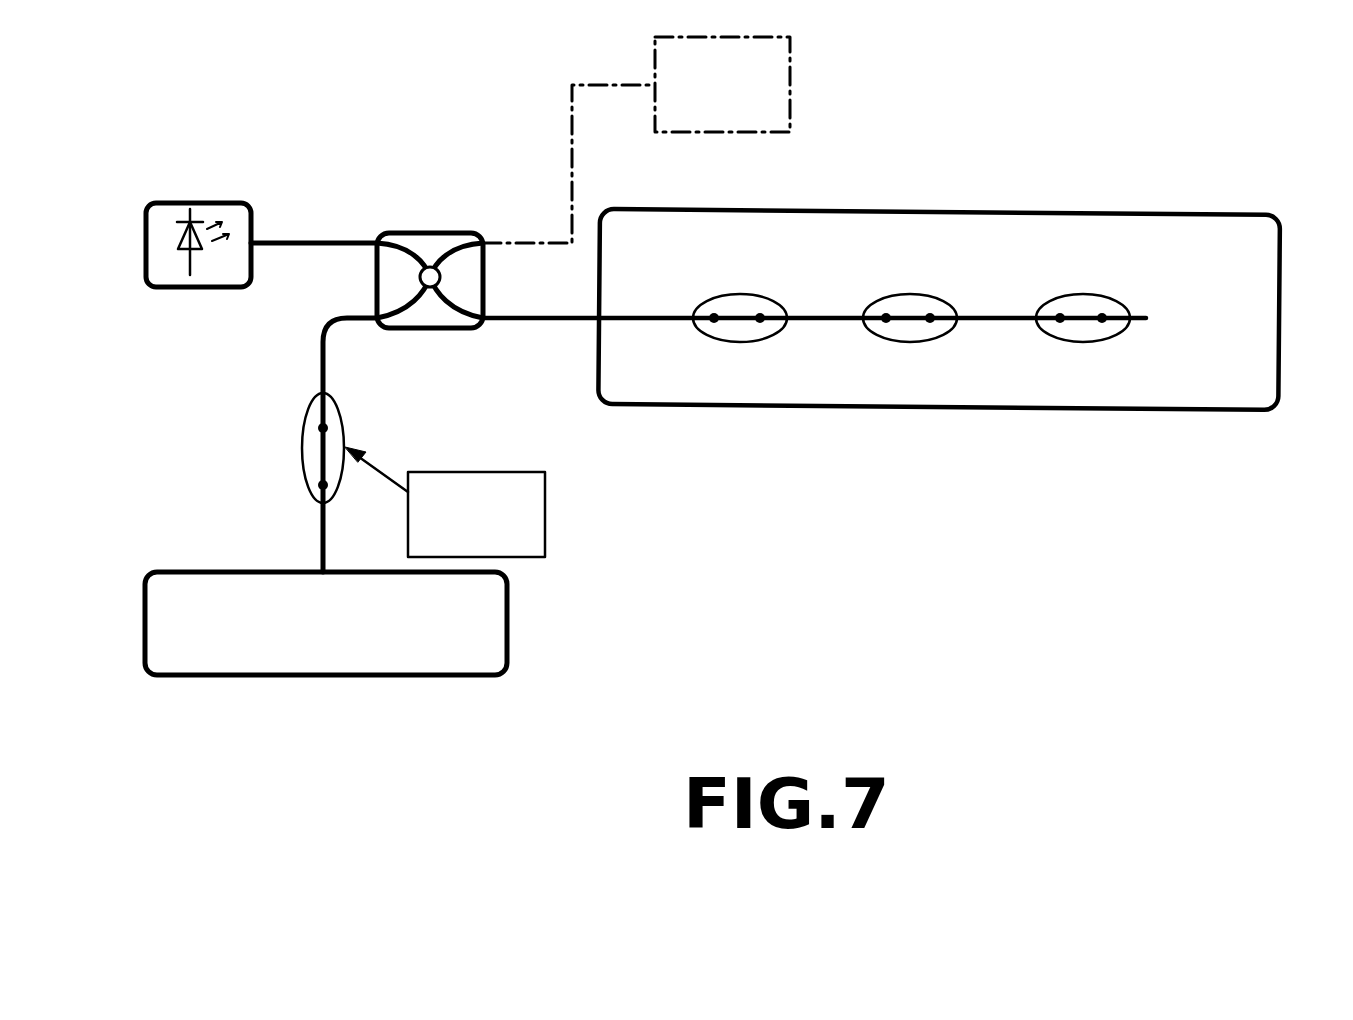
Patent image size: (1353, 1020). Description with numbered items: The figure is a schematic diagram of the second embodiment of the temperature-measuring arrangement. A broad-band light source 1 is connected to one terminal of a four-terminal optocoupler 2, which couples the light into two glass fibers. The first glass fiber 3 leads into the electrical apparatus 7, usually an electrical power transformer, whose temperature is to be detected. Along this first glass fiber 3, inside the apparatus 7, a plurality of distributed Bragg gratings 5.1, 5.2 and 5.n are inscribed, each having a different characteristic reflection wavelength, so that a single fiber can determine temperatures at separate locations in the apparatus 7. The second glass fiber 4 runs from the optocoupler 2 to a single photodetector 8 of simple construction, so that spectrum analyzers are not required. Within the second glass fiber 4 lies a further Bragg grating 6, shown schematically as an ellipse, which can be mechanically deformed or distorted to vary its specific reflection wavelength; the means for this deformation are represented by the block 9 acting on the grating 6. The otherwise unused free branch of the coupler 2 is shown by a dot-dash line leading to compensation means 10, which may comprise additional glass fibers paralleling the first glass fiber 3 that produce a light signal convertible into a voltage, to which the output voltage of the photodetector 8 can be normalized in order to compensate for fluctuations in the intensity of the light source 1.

The broad-band light source 1 is at (237, 203).
The optocoupler 2 is at (438, 233).
The first glass fiber 3 is at (543, 327).
The second glass fiber 4 is at (323, 343).
The distributed Bragg grating 5.1 is at (741, 332).
The distributed Bragg grating 5.2 is at (912, 331).
The distributed Bragg grating 5.n is at (1083, 335).
The Bragg grating 6 is at (305, 457).
The electrical apparatus 7 is at (1273, 253).
The photodetector 8 is at (172, 616).
The deformation means 9 is at (445, 502).
The intensity compensation means 10 is at (745, 102).